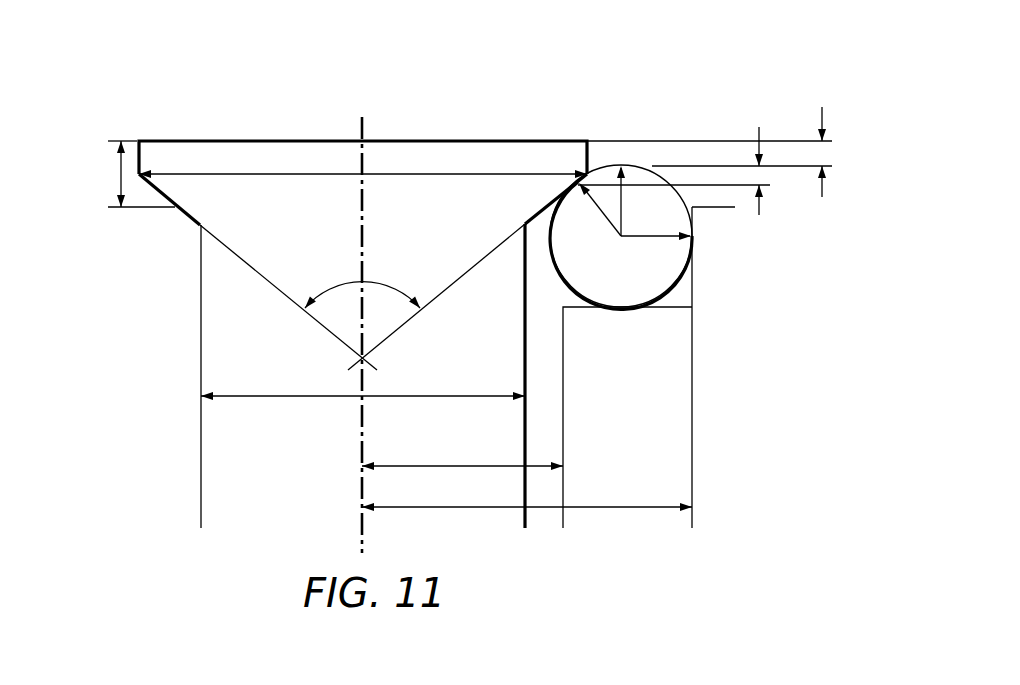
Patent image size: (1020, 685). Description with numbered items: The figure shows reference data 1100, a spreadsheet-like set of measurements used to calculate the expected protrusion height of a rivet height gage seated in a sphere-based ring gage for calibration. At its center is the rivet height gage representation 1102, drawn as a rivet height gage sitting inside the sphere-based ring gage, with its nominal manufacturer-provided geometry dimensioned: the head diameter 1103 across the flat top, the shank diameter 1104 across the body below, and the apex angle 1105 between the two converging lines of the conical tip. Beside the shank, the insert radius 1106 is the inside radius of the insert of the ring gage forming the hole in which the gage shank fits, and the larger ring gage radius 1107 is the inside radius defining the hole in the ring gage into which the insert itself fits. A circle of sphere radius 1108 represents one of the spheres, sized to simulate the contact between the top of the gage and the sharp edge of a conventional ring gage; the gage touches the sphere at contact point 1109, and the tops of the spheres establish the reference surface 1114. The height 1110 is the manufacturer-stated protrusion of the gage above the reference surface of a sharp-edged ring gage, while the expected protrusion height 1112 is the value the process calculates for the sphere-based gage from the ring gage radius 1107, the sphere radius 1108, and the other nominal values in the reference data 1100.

The reference data 1100 is at (309, 104).
The rivet height gage representation 1102 is at (525, 140).
The head diameter 1103 is at (275, 175).
The shank diameter 1104 is at (277, 399).
The apex angle 1105 is at (340, 285).
The insert radius 1106 is at (435, 464).
The ring gage radius 1107 is at (470, 508).
The sphere radius 1108 is at (633, 215).
The contact point 1109 is at (573, 181).
The height 1110 is at (120, 166).
The expected protrusion height 1112 is at (827, 155).
The reference surface 1114 is at (792, 168).